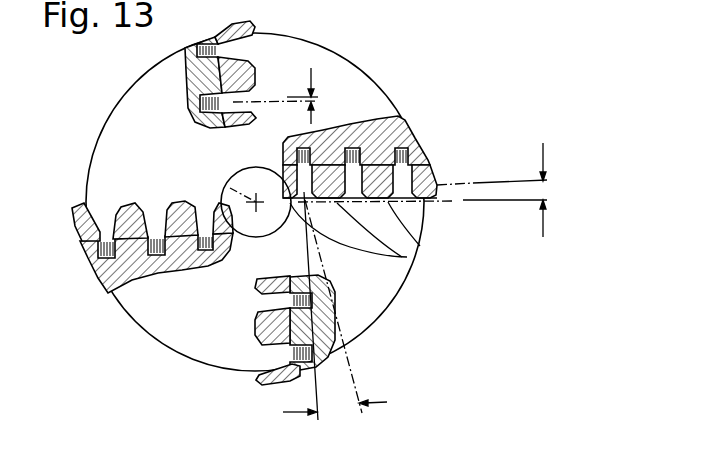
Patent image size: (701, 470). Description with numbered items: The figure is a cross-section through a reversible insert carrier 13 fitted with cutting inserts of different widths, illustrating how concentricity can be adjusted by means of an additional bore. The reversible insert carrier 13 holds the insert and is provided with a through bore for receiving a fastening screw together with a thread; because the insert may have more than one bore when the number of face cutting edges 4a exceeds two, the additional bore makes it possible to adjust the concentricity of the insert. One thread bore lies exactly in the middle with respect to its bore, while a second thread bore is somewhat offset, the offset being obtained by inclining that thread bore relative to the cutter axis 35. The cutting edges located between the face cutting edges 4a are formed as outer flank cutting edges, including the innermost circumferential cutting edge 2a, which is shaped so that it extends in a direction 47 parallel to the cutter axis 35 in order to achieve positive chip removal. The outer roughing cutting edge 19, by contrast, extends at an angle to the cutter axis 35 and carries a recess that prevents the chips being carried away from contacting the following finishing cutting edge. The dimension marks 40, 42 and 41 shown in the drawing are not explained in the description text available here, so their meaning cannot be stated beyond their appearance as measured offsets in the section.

The reversible insert carrier 13 is at (368, 110).
The axial offset of jaw 40 is at (318, 98).
The clamping jaw 42 is at (393, 146).
The roughing cutting edge 19 is at (440, 190).
The direction parallel to the cutter axis 47 is at (544, 190).
The outer flank cutting edge 2a is at (261, 165).
The cutter axis 35 is at (222, 191).
The face cutting edges 4a is at (426, 203).
The offset distance 41 is at (335, 307).